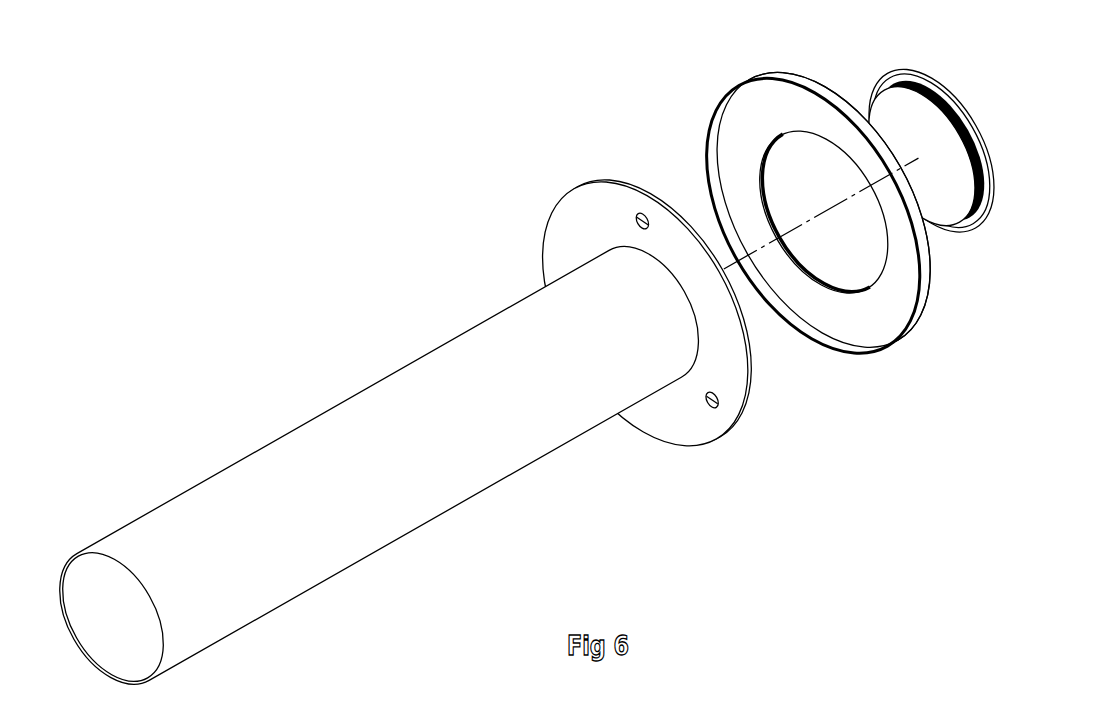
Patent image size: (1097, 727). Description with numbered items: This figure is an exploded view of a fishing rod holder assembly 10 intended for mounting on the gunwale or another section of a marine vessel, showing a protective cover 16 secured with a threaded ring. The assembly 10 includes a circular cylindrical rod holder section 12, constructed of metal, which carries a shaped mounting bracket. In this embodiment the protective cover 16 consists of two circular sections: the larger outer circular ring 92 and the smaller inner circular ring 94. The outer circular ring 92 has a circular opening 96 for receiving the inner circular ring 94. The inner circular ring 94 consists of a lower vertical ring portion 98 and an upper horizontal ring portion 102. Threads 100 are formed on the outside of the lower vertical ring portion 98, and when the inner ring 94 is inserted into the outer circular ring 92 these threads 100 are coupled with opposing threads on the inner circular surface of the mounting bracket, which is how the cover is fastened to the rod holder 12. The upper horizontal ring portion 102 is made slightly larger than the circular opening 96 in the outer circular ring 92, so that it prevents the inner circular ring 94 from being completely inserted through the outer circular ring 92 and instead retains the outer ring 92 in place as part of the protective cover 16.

The fishing rod holder assembly 10 is at (313, 540).
The circular cylindrical rod holder section 12 is at (602, 180).
The protective cover 16 is at (773, 76).
The outer circular ring 92 is at (900, 338).
The inner circular ring 94 is at (899, 67).
The circular opening 96 is at (818, 257).
The lower vertical ring portion 98 is at (942, 215).
The threads 100 is at (966, 130).
The upper horizontal ring portion 102 is at (995, 181).